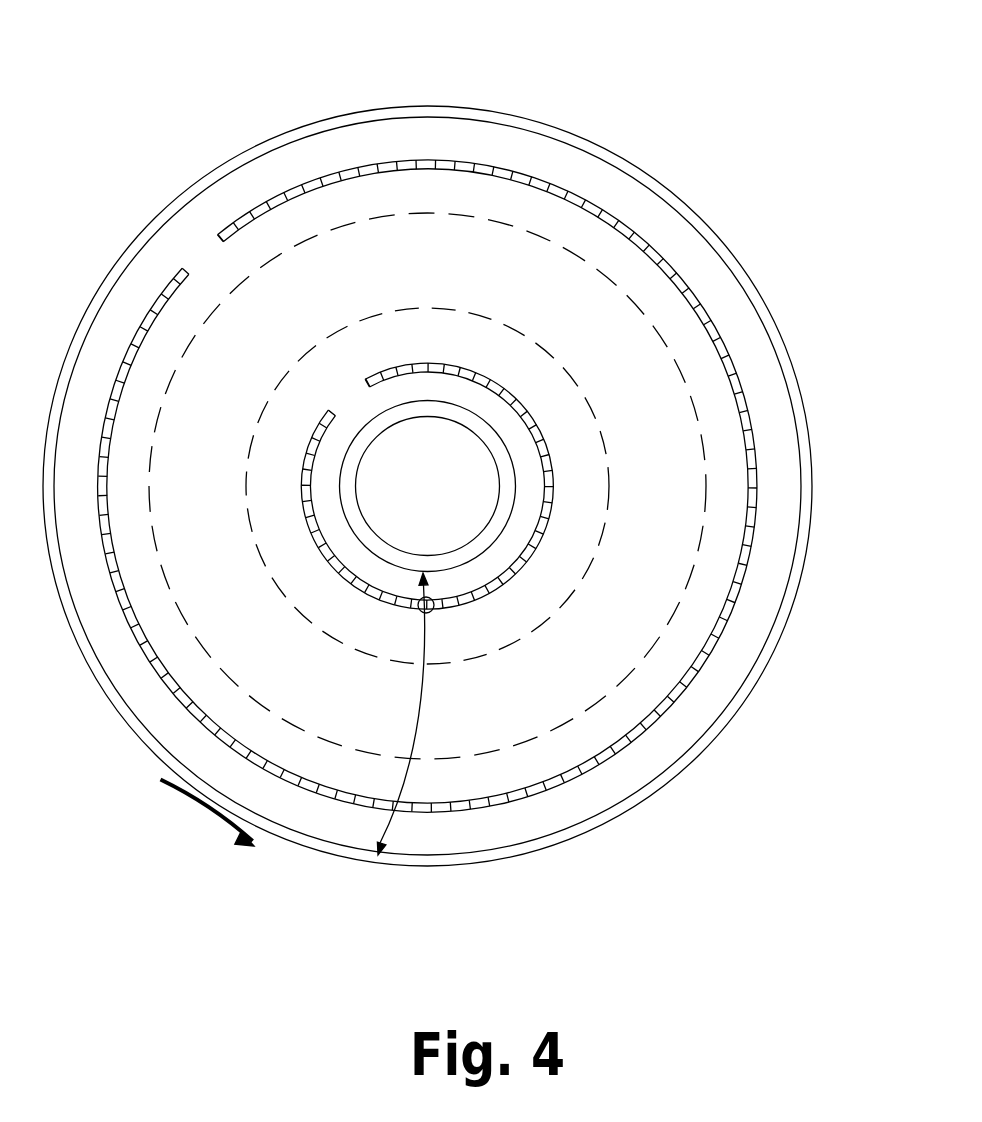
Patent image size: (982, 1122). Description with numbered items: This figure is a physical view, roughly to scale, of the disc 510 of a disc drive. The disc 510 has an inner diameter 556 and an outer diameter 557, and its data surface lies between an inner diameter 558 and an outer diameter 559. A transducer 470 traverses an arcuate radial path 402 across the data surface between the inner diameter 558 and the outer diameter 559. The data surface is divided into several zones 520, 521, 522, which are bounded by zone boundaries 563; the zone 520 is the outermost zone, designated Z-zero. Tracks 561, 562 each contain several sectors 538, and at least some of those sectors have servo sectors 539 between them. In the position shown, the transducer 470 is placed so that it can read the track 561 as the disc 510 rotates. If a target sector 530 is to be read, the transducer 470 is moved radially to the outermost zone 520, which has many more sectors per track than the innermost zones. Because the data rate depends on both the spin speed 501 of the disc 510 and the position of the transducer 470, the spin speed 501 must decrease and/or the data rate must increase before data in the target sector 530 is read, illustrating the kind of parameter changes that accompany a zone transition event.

The disc 510 is at (197, 72).
The outer diameter 557 is at (766, 669).
The outer diameter of the data surface 559 is at (724, 716).
The target sector 530 is at (535, 170).
The servo sectors 539 is at (388, 178).
The sectors 538 is at (393, 170).
The zone boundaries 563 is at (659, 342).
The track 561 is at (605, 514).
The track 562 is at (752, 535).
The outermost zone 520 is at (249, 272).
The zone 521 is at (303, 348).
The zone 522 is at (366, 421).
The inner diameter of the data surface 558 is at (494, 531).
The inner diameter 556 is at (408, 551).
The transducer 470 is at (434, 610).
The arcuate radial path 402 is at (428, 688).
The spin speed 501 is at (208, 830).